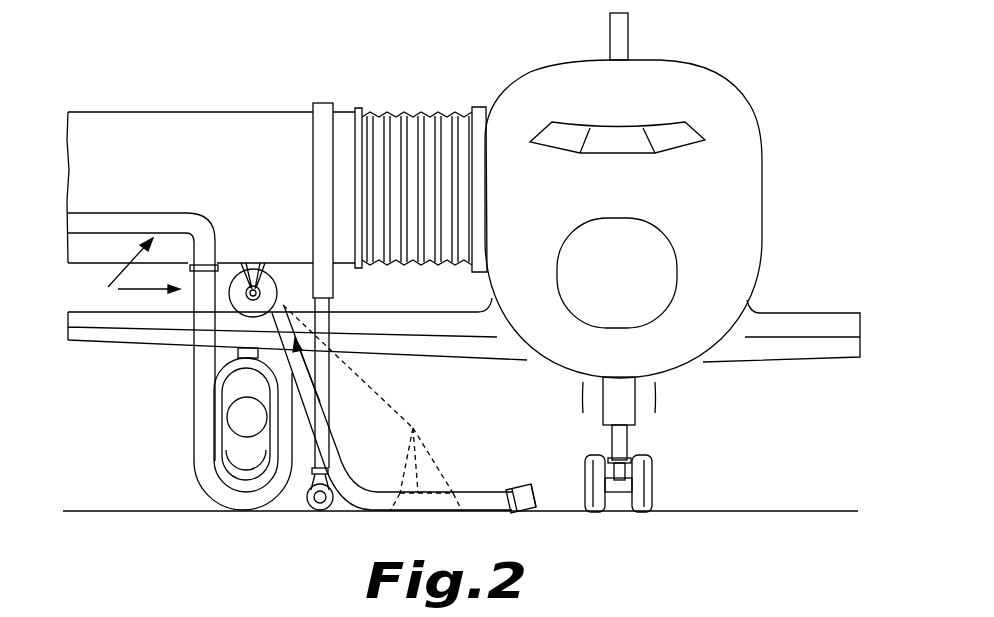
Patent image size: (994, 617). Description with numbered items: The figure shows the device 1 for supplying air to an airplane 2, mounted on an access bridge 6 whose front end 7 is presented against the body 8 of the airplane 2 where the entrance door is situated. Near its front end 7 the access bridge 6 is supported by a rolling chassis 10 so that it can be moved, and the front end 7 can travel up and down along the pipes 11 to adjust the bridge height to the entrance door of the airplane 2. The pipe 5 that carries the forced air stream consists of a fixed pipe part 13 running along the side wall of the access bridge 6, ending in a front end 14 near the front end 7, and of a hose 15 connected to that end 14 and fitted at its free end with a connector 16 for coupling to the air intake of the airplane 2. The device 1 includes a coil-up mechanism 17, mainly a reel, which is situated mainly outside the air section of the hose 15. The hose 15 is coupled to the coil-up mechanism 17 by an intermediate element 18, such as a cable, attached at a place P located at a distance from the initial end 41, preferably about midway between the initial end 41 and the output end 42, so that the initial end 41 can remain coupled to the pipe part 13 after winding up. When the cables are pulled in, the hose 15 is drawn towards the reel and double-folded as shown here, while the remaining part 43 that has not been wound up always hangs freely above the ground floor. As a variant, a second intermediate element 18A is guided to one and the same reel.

The device 1 is at (201, 158).
The airplane 2 is at (738, 115).
The pipe 5 is at (130, 270).
The access bridge 6 is at (255, 120).
The front end 7 is at (477, 136).
The body 8 is at (503, 103).
The rolling chassis 10 is at (303, 478).
The pipes 11 is at (330, 372).
The fixed pipe part 13 is at (115, 222).
The front end 14 is at (207, 260).
The hose 15 is at (220, 497).
The connector 16 is at (520, 503).
The coil-up mechanism 17 is at (296, 288).
The intermediate element 18 is at (290, 340).
The second intermediate element 18A is at (398, 415).
The initial end 41 is at (193, 290).
The output end 42 is at (492, 498).
The remaining part 43 is at (200, 347).
The place P is at (288, 375).